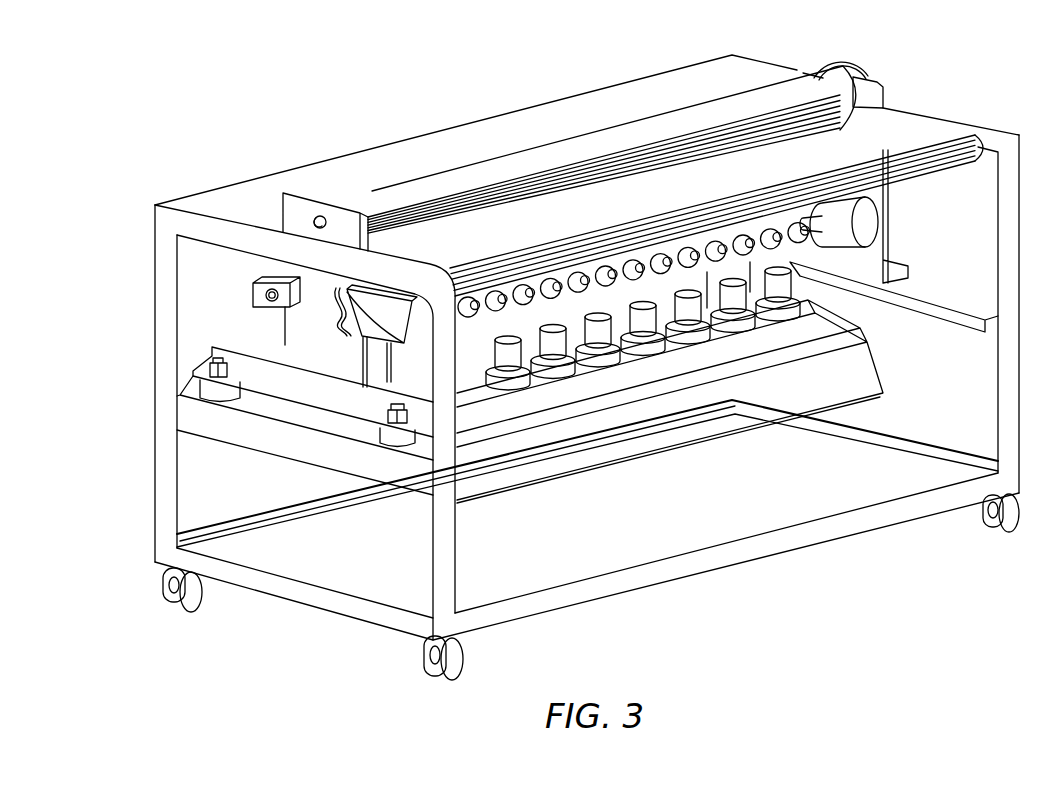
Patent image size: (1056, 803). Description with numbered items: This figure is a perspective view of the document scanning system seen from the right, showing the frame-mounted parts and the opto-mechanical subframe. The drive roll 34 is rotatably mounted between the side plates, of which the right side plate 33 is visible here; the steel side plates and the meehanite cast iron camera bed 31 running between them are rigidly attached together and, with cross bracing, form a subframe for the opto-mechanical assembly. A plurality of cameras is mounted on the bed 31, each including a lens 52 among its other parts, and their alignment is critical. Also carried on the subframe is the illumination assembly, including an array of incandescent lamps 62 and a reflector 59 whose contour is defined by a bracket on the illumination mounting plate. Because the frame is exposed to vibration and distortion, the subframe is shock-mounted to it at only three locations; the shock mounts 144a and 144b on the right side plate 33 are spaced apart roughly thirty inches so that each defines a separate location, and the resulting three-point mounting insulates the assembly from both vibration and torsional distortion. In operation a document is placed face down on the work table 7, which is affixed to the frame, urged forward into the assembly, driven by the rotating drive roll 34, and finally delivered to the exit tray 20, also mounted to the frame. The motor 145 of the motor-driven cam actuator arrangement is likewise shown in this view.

The work table 7 is at (465, 150).
The drive roll 34 is at (607, 145).
The exit tray 20 is at (750, 158).
The reflector 59 is at (160, 211).
The motor 145 is at (255, 293).
The right side plate 33 is at (285, 345).
The shock mount 144a is at (228, 393).
The shock mount 144b is at (407, 448).
The incandescent lamps 62 is at (807, 223).
The lens 52 is at (845, 285).
The camera bed 31 is at (720, 356).